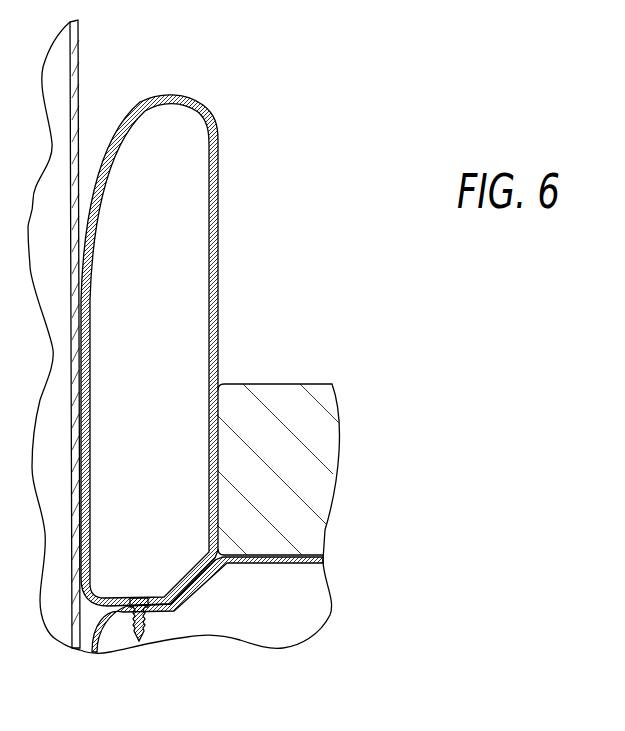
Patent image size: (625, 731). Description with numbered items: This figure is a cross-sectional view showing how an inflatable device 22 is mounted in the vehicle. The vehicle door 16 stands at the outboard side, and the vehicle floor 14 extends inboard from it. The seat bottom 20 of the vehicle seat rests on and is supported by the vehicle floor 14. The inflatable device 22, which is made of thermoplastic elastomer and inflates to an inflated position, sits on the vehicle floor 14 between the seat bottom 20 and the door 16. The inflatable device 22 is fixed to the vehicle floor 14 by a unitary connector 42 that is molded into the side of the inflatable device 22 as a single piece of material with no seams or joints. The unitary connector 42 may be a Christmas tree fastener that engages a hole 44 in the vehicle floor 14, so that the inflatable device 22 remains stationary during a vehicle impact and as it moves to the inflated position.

The vehicle floor 14 is at (290, 565).
The vehicle door 16 is at (80, 72).
The seat bottom 20 is at (318, 443).
The inflatable device 22 is at (218, 190).
The unitary connector 42 is at (139, 641).
The hole 44 is at (124, 598).